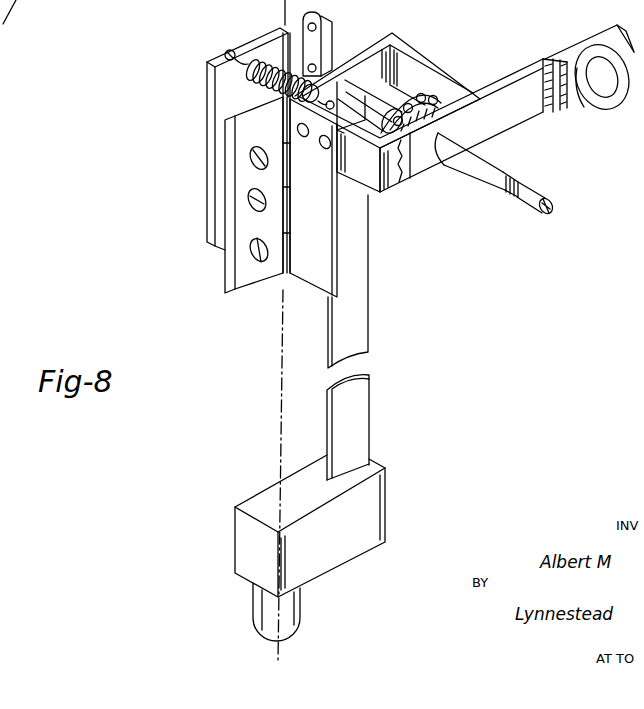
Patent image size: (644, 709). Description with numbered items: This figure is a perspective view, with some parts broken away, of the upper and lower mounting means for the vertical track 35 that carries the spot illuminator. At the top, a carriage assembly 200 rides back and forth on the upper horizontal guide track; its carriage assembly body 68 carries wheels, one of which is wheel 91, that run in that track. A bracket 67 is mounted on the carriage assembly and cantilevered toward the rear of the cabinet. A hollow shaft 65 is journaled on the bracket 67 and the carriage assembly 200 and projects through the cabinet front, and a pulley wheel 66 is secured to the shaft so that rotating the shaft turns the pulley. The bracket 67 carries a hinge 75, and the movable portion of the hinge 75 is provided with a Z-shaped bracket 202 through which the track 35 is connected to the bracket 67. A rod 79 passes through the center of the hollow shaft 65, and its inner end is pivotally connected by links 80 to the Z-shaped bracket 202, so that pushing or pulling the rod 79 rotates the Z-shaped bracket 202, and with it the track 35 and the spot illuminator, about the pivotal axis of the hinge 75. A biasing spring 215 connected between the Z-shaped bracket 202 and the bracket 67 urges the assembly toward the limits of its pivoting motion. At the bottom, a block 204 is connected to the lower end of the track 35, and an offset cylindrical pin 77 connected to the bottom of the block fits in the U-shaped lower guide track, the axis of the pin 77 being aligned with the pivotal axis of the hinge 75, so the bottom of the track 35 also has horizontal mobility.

The biasing spring 215 is at (268, 52).
The links 80 is at (333, 40).
The bracket 67 is at (425, 56).
The pulley wheel 66 is at (442, 100).
The carriage assembly body 68 is at (552, 60).
The wheel 91 is at (577, 100).
The shaft 65 is at (492, 162).
The rod 79 is at (524, 190).
The carriage assembly 200 is at (411, 206).
The Z-shaped bracket 202 is at (206, 104).
The hinge 75 is at (274, 280).
The track 35 is at (369, 306).
The block 204 is at (388, 512).
The offset cylindrical pin 77 is at (303, 599).